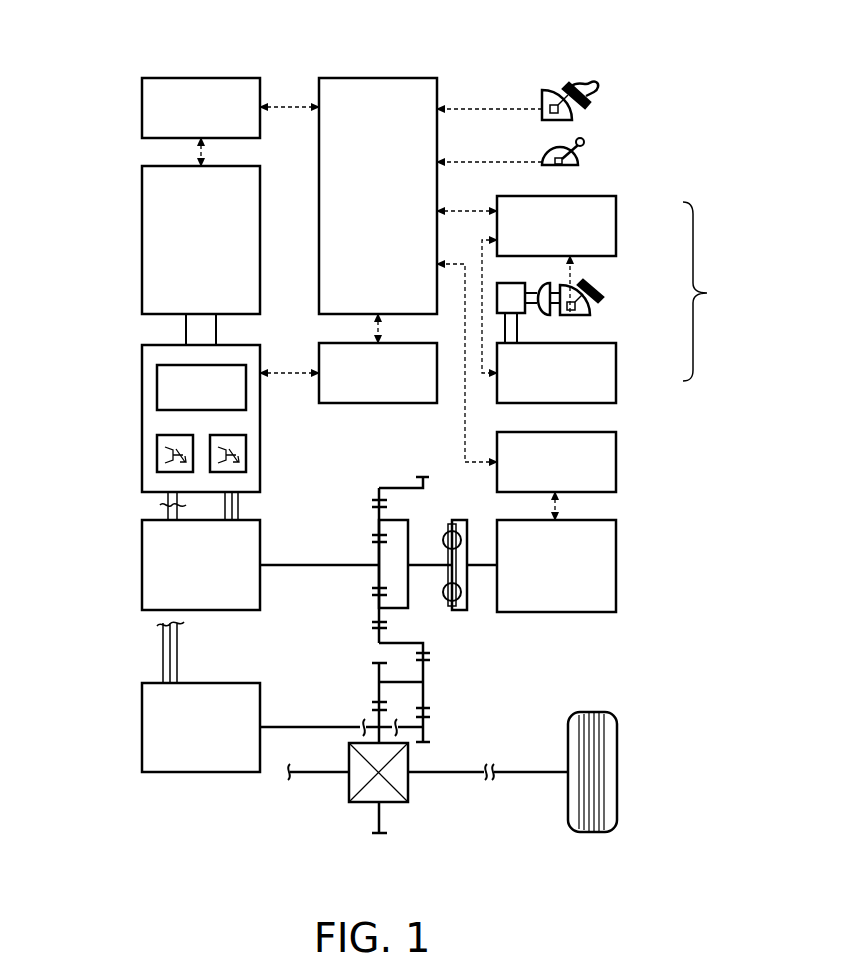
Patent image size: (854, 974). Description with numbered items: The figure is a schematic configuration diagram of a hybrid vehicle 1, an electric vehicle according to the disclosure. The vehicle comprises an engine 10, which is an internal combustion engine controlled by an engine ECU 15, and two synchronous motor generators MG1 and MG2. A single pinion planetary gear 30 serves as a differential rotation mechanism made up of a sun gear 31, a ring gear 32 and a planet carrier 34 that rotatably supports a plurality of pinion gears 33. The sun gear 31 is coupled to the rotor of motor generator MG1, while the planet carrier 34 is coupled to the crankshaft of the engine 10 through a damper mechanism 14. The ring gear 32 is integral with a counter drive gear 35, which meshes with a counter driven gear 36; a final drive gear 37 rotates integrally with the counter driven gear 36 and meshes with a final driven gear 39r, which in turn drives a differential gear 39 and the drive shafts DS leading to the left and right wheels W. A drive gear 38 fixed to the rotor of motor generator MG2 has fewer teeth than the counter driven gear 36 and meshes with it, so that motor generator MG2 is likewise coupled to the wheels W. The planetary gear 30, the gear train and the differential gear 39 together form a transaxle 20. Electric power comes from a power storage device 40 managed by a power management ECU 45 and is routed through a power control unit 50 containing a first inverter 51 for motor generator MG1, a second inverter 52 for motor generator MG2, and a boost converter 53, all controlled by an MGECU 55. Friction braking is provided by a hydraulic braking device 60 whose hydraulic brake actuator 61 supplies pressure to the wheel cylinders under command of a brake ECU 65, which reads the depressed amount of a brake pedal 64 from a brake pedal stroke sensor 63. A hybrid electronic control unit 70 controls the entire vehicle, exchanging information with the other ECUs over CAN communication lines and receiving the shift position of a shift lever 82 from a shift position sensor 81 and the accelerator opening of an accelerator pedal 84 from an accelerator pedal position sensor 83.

The hybrid vehicle 1 is at (110, 642).
The engine 10 is at (616, 567).
The damper mechanism 14 is at (467, 587).
The engine electronic control unit 15 is at (616, 445).
The transaxle 20 is at (419, 540).
The single pinion planetary gear 30 is at (376, 543).
The sun gear 31 is at (377, 558).
The ring gear 32 is at (377, 492).
The pinion gears 33 is at (377, 617).
The planet carrier 34 is at (393, 520).
The counter drive gear 35 is at (380, 640).
The counter driven gear 36 is at (425, 678).
The final drive gear 37 is at (379, 682).
The drive gear 38 is at (427, 725).
The differential gear 39 is at (410, 802).
The final driven gear 39r is at (374, 812).
The power storage device 40 is at (142, 216).
The power management electronic control unit 45 is at (200, 78).
The power control unit 50 is at (142, 358).
The first inverter 51 is at (157, 445).
The second inverter 52 is at (228, 435).
The boost converter 53 is at (157, 371).
The motor electronic control unit 55 is at (378, 403).
The hydraulic braking device 60 is at (620, 299).
The hydraulic brake actuator 61 is at (616, 372).
The brake pedal stroke sensor 63 is at (584, 300).
The brake pedal 64 is at (590, 283).
The brake electronic control unit 65 is at (616, 216).
The hybrid electronic control unit 70 is at (377, 78).
The shift position sensor 81 is at (607, 149).
The shift lever 82 is at (586, 138).
The accelerator pedal position sensor 83 is at (607, 71).
The accelerator pedal 84 is at (565, 88).
The motor generator MG1 is at (207, 610).
The motor generator MG2 is at (197, 772).
The drive shafts DS is at (525, 773).
The wheels W is at (617, 767).